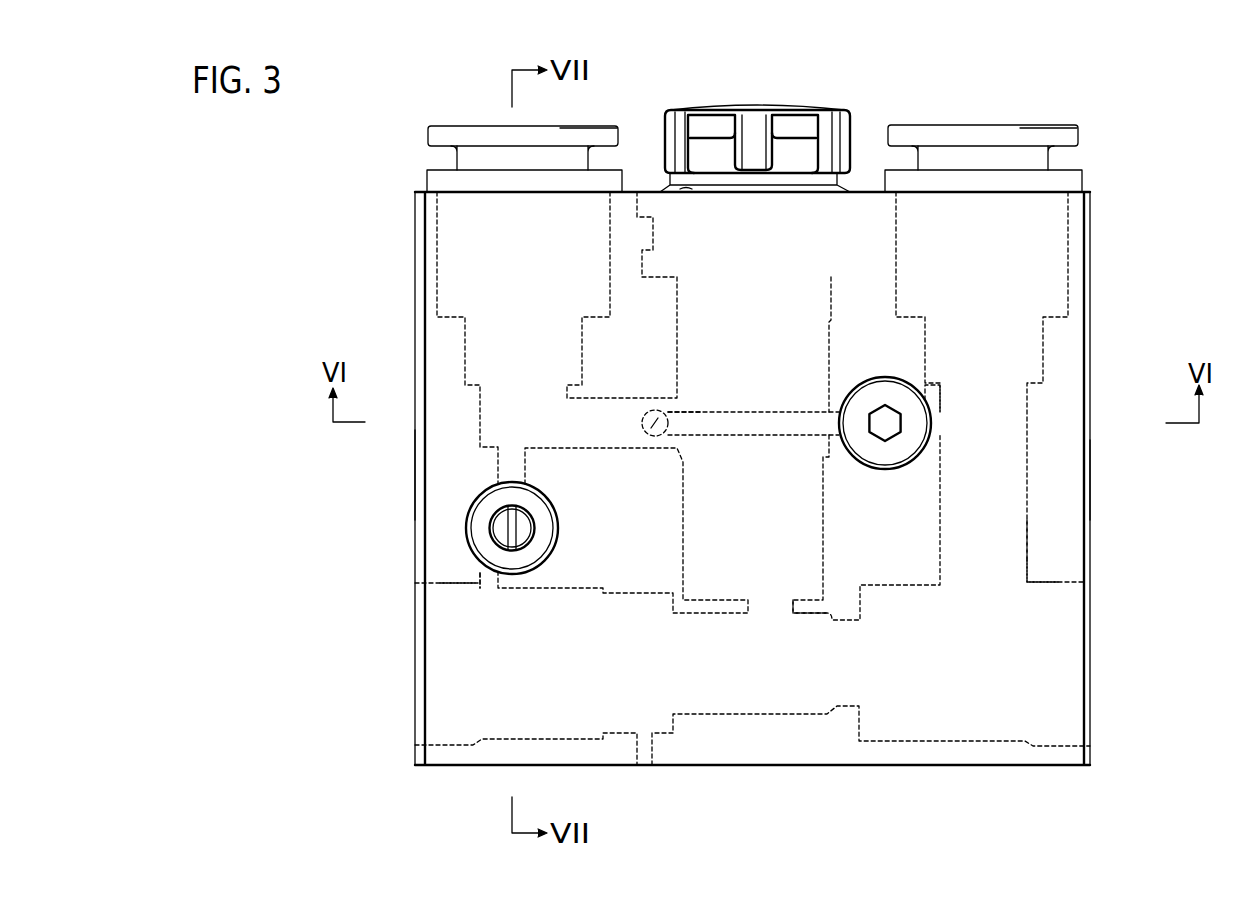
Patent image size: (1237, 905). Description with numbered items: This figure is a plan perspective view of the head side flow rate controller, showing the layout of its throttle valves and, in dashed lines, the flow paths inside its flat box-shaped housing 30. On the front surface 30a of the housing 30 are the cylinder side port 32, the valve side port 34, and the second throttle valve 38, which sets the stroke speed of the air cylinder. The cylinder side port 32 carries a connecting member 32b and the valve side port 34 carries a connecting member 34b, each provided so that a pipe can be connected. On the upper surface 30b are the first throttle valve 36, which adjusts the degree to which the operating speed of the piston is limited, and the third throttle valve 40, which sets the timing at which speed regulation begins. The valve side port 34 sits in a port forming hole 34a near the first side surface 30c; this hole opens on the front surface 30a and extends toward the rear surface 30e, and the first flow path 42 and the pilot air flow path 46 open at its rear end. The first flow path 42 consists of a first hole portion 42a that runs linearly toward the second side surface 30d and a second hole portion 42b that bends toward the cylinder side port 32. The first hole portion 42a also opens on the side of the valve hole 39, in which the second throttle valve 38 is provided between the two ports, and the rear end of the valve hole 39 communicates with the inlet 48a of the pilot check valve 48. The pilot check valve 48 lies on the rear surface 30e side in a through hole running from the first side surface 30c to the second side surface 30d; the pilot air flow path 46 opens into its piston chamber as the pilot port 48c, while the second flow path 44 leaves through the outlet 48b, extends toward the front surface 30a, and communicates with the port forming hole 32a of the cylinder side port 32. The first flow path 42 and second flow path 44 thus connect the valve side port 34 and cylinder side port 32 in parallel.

The housing 30 is at (1096, 214).
The front surface 30a is at (875, 190).
The upper surface 30b is at (1068, 376).
The first side surface 30c is at (415, 478).
The second side surface 30d is at (1090, 480).
The rear surface 30e is at (855, 766).
The cylinder side port 32 is at (963, 127).
The port forming hole 32a is at (1065, 262).
The connecting member 32b is at (1052, 135).
The valve side port 34 is at (450, 127).
The port forming hole 34a is at (440, 262).
The connecting member 34b is at (580, 135).
The first throttle valve 36 is at (880, 452).
The second throttle valve 38 is at (729, 104).
The valve hole 39 is at (826, 352).
The third throttle valve 40 is at (542, 543).
The first flow path 42 is at (672, 497).
The first hole portion 42a is at (604, 425).
The second hole portion 42b is at (655, 436).
The second flow path 44 is at (1024, 537).
The pilot air flow path 46 is at (512, 473).
The pilot check valve 48 is at (738, 718).
The inlet 48a is at (793, 613).
The outlet 48b is at (1027, 582).
The pilot port 48c is at (480, 588).